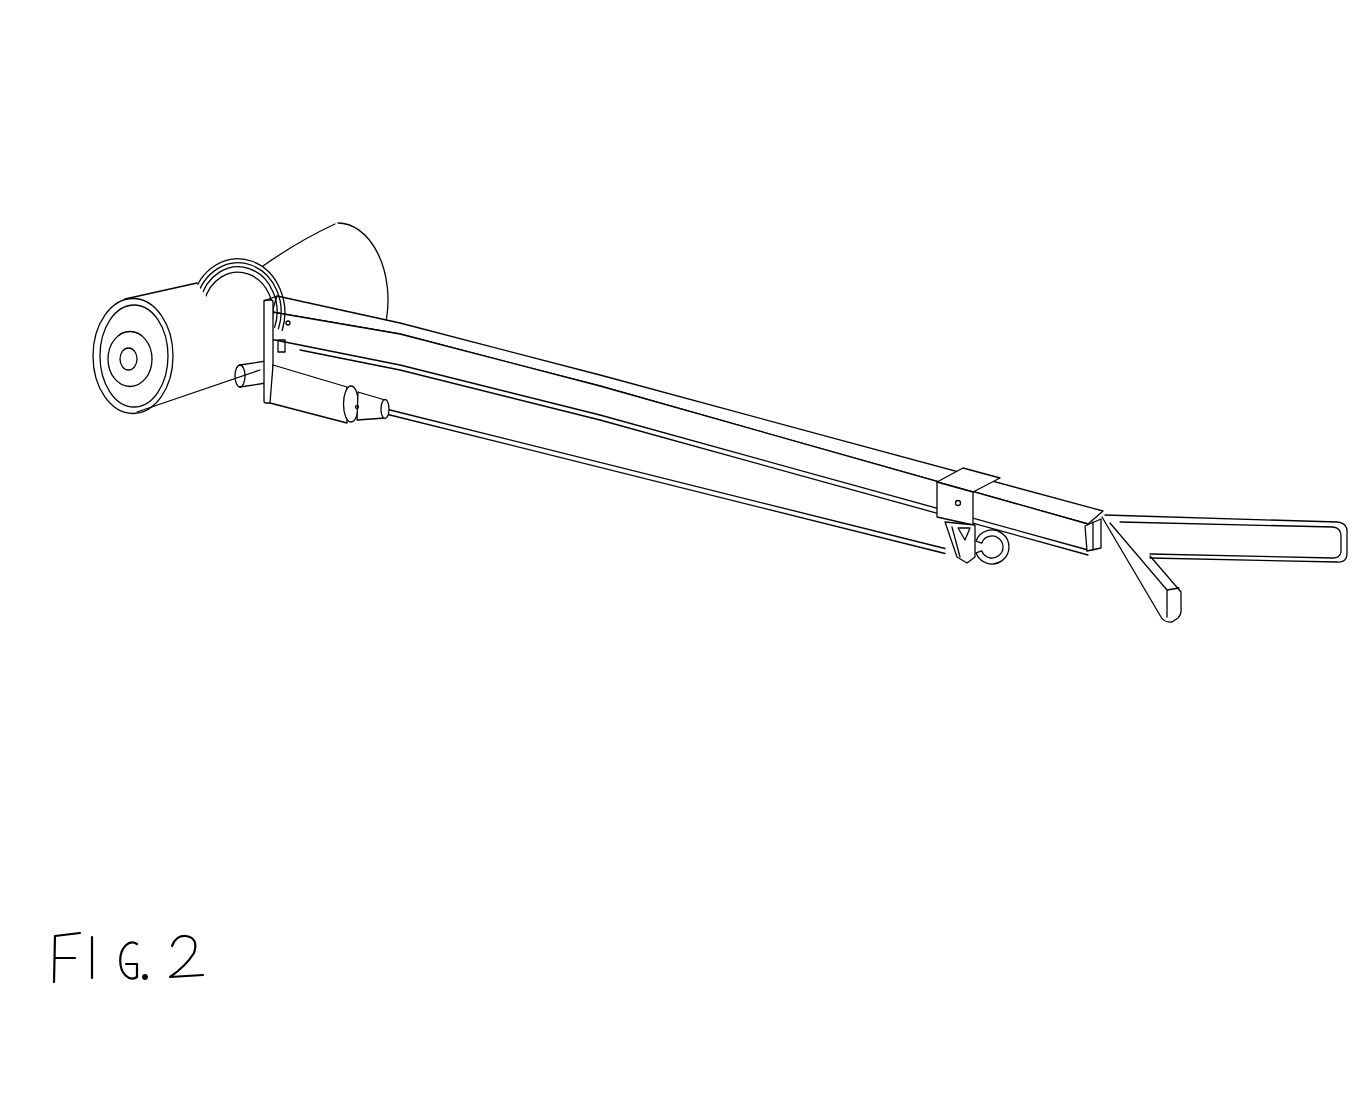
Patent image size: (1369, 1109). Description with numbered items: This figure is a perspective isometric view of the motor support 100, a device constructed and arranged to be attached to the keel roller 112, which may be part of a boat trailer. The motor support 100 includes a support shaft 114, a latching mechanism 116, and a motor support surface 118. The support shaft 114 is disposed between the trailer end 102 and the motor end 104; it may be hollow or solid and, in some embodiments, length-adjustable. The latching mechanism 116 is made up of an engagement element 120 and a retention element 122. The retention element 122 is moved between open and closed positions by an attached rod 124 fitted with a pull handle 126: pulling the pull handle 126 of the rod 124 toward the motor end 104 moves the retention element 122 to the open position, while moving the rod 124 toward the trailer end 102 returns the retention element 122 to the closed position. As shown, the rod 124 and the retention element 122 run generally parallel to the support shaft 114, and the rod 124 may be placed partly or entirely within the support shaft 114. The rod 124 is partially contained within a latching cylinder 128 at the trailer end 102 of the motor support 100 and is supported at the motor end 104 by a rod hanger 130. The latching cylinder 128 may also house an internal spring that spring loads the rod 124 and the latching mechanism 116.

The motor support 100 is at (720, 433).
The trailer end 102 is at (285, 349).
The motor end 104 is at (808, 548).
The keel roller 112 is at (323, 267).
The support shaft 114 is at (653, 425).
The latching mechanism 116 is at (292, 427).
The motor support surface 118 is at (1216, 503).
The engagement element 120 is at (237, 270).
The retention element 122 is at (252, 377).
The rod 124 is at (653, 480).
The pull handle 126 is at (1002, 562).
The latching cylinder 128 is at (333, 492).
The rod hanger 130 is at (963, 477).